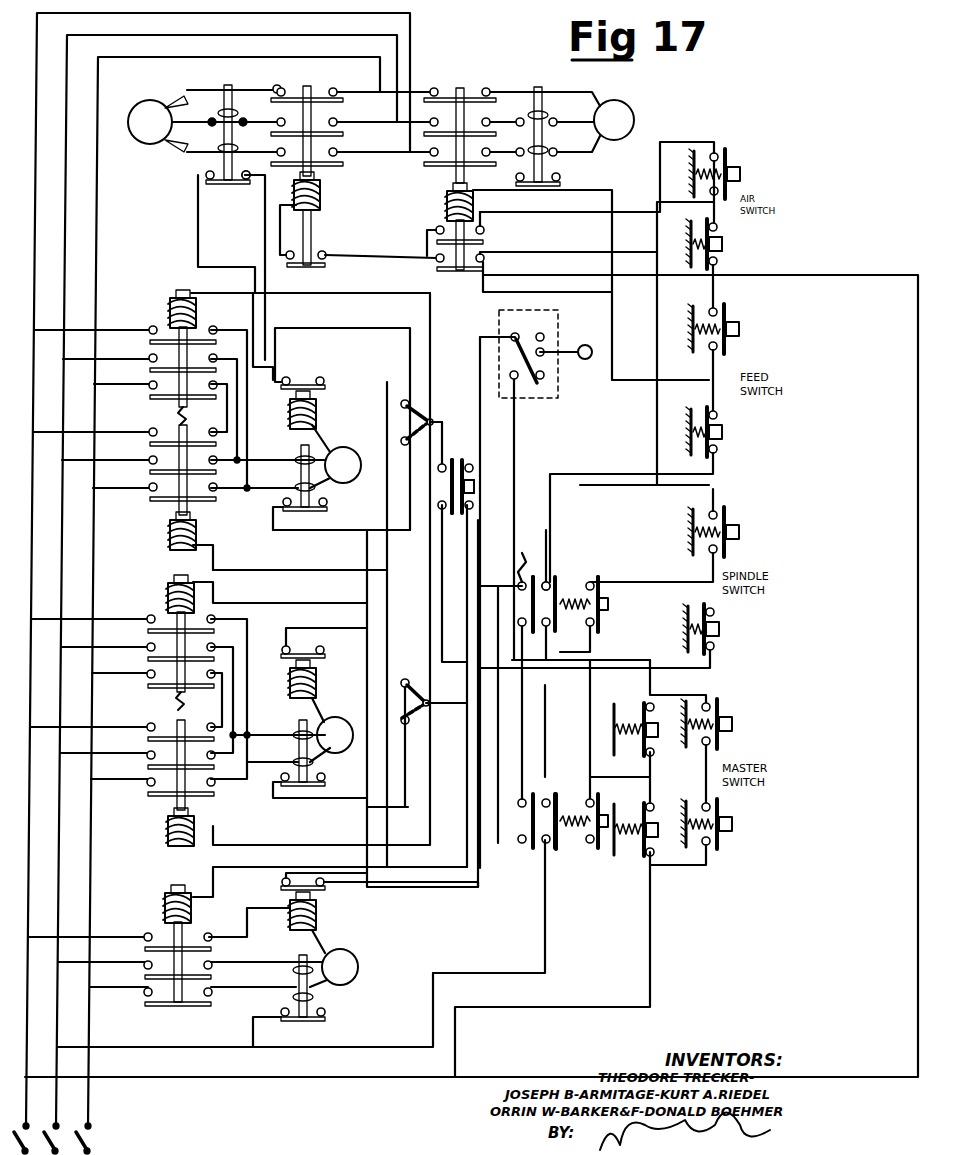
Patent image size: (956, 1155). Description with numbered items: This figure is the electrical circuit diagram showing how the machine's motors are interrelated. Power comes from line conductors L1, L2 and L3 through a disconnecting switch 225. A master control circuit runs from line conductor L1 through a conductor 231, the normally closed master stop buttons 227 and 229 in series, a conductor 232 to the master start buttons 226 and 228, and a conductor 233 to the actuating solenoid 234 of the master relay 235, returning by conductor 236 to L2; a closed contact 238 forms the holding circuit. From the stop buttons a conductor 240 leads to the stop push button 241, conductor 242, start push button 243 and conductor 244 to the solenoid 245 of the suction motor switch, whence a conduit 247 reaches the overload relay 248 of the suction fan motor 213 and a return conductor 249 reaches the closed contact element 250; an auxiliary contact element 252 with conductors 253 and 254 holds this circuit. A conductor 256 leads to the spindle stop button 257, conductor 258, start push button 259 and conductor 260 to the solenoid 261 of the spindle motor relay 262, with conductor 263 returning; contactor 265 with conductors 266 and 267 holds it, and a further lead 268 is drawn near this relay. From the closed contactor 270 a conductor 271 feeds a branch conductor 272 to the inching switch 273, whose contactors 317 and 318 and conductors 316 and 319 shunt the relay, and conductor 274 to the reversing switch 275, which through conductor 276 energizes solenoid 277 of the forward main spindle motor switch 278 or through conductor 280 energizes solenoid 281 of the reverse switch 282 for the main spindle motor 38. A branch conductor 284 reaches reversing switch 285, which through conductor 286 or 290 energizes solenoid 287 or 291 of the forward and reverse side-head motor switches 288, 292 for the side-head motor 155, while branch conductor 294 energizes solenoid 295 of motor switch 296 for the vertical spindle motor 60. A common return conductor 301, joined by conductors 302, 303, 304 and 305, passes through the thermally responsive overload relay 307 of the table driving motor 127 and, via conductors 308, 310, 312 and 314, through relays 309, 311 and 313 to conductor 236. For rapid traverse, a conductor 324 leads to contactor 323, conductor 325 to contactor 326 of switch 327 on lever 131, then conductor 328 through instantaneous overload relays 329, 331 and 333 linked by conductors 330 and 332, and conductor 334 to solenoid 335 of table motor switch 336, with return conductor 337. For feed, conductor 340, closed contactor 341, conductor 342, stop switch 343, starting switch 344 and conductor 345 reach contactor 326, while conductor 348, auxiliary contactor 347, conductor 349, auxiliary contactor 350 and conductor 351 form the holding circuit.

The line conductor L1 is at (26, 1102).
The line conductor L2 is at (57, 1101).
The line conductor L3 is at (90, 1098).
The disconnecting switch 225 is at (90, 1140).
The table driving motor 127 is at (146, 140).
The thermally responsive overload relay 307 is at (230, 186).
The return conductor 337 is at (276, 176).
The table motor switch 336 is at (302, 112).
The solenoid 335 is at (322, 190).
The auxiliary contactor 347 is at (318, 265).
The conductor 349 is at (385, 256).
The solenoid 245 is at (450, 196).
The conduit 247 is at (474, 194).
The auxiliary contact element 252 is at (484, 240).
The auxiliary contactor 350 is at (436, 268).
The conductor 351 is at (486, 259).
The conductor 254 is at (484, 222).
The thermally responsive overload relay 248 is at (545, 166).
The suction fan motor 213 is at (630, 108).
The start push button 243 is at (742, 165).
The conductor 244 is at (540, 212).
The conductor 242 is at (722, 226).
The stop push button 241 is at (726, 245).
The return conductor 249 is at (650, 245).
The conductor 253 is at (590, 252).
The conductor 348 is at (628, 380).
The conductor 345 is at (684, 274).
The conductor 240 is at (657, 543).
The table motor push button starting switch 344 is at (740, 335).
The table motor push button stop switch 343 is at (724, 430).
The conductor 260 is at (706, 486).
The start push button 259 is at (740, 528).
The conductor 258 is at (708, 575).
The spindle motor stop button 257 is at (723, 625).
The conductor 256 is at (712, 668).
The master start button 228 is at (735, 715).
The master start button 226 is at (738, 835).
The conductor 233 is at (692, 866).
The master stop button 229 is at (640, 712).
The closed contact 238 is at (635, 798).
The conductor 232 is at (588, 725).
The master stop button 227 is at (645, 866).
The conductor 231 is at (555, 1006).
The conductor 340 is at (545, 666).
The conductor 268 is at (600, 662).
The contactor 265 is at (595, 604).
The closed contactor 270 is at (528, 600).
The conductor 263 is at (530, 626).
The conductor 266 is at (600, 655).
The conductor 342 is at (544, 530).
The spindle motor relay 262 is at (530, 557).
The closed contactor 341 is at (546, 566).
The solenoid 261 is at (560, 580).
The conductor 267 is at (593, 572).
The actuating solenoid 234 is at (540, 800).
The conductor 324 is at (562, 790).
The closed contact element 250 is at (545, 792).
The conductor 325 is at (498, 760).
The contactor 323 is at (520, 820).
The master relay 235 is at (532, 850).
The return conductor 236 is at (543, 938).
The conductor 271 is at (495, 520).
The contactor 326 is at (516, 385).
The rapid traverse control lever 131 is at (592, 345).
The switch 327 is at (512, 348).
The conductor 328 is at (480, 350).
The reversing switch 275 is at (400, 410).
The conductor 274 is at (457, 420).
The conductor 319 is at (454, 445).
The contactor 317 is at (470, 462).
The second contactor 318 is at (456, 460).
The inching switch 273 is at (476, 486).
The conductor 316 is at (446, 608).
The branch conductor 272 is at (467, 528).
The reversing switch 285 is at (430, 712).
The branch conductor 284 is at (412, 700).
The conductor 330 is at (366, 832).
The branch conductor 294 is at (467, 825).
The conductor 302 is at (213, 840).
The conductor 276 is at (365, 328).
The conductor 334 is at (274, 346).
The conductor 308 is at (197, 228).
The return conductor 301 is at (264, 224).
The conductor 305 is at (205, 290).
The actuating solenoid 277 is at (200, 306).
The forward main spindle motor switch 278 is at (178, 352).
The reverse main spindle motor switch 282 is at (180, 478).
The solenoid 281 is at (168, 530).
The conductor 304 is at (214, 560).
The conductor 303 is at (295, 570).
The instantaneous overload relay 333 is at (312, 386).
The main spindle motor 38 is at (344, 446).
The thermally responsive relay 309 is at (297, 470).
The conductor 310 is at (270, 513).
The conductor 280 is at (345, 532).
The solenoid 287 is at (168, 590).
The conductor 286 is at (327, 603).
The forward side-head spindle motor switch 288 is at (178, 640).
The reverse side-head motor switch 292 is at (175, 790).
The solenoid 291 is at (168, 826).
The conductor 332 is at (299, 628).
The instantaneous overload relay 331 is at (292, 668).
The side-head motor 155 is at (352, 715).
The thermally responsive relay 311 is at (296, 742).
The conductor 312 is at (272, 790).
The conductor 290 is at (326, 807).
The solenoid 295 is at (168, 897).
The motor switch 296 is at (150, 932).
The thermally responsive relay 313 is at (302, 985).
The instantaneous overload relay 329 is at (280, 885).
The vertical spindle motor 60 is at (359, 966).
The conductor 314 is at (256, 1034).